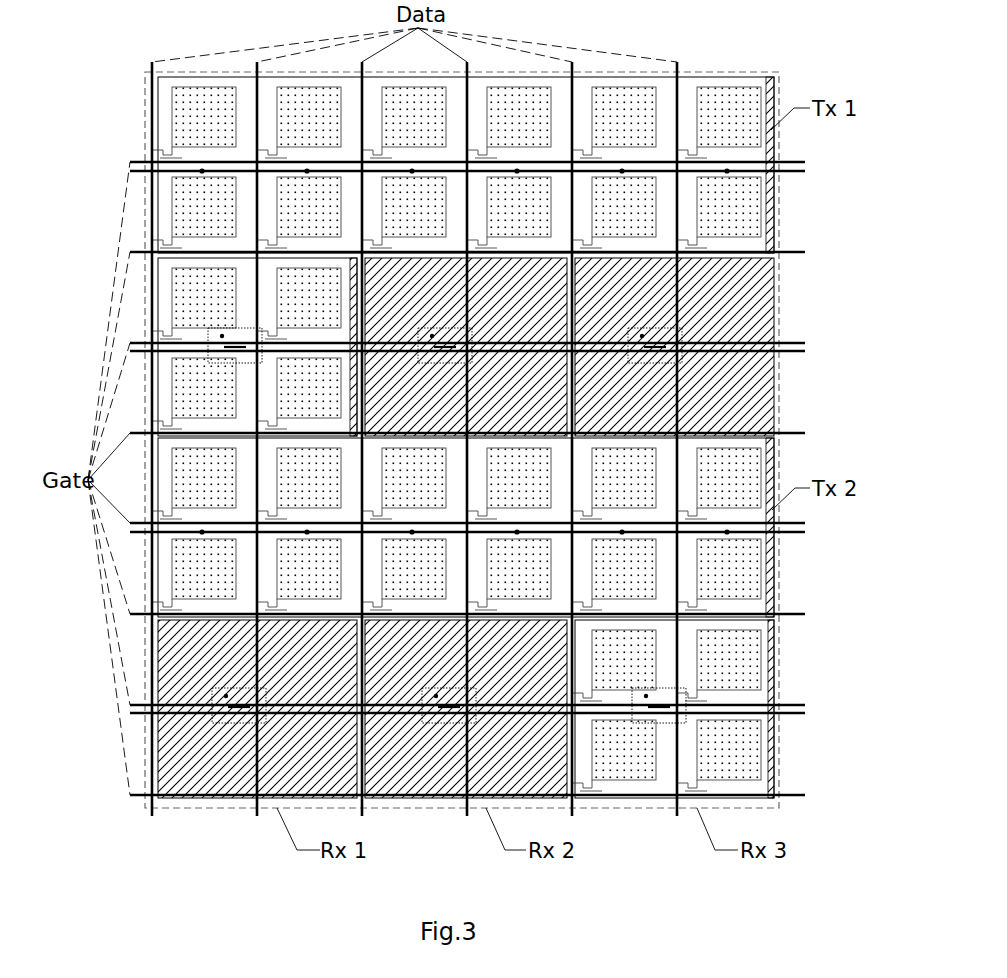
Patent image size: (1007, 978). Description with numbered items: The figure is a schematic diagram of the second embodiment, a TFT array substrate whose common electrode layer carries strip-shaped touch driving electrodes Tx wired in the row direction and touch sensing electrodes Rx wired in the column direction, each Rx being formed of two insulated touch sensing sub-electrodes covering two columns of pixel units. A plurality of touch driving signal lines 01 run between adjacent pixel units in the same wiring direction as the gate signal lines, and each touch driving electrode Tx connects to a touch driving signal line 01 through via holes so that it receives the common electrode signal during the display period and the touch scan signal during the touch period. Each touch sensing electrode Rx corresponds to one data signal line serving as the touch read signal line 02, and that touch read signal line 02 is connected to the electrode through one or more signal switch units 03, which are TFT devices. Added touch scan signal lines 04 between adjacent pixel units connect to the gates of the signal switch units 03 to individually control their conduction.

The touch driving signal line 01 is at (491, 377).
The touch read signal line 02 is at (257, 818).
The signal switch unit 03 is at (467, 503).
The touch scan signal line 04 is at (492, 558).